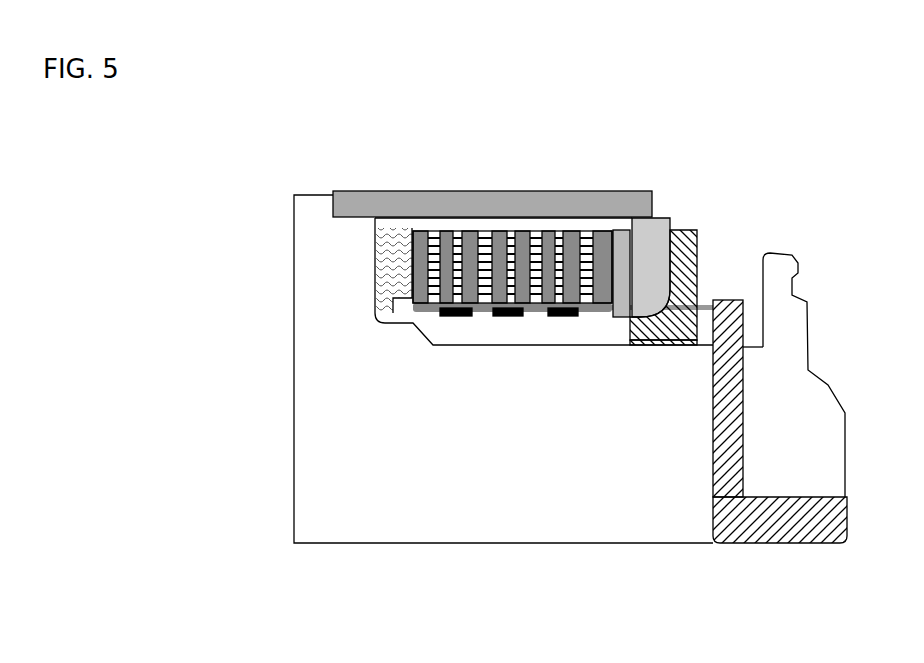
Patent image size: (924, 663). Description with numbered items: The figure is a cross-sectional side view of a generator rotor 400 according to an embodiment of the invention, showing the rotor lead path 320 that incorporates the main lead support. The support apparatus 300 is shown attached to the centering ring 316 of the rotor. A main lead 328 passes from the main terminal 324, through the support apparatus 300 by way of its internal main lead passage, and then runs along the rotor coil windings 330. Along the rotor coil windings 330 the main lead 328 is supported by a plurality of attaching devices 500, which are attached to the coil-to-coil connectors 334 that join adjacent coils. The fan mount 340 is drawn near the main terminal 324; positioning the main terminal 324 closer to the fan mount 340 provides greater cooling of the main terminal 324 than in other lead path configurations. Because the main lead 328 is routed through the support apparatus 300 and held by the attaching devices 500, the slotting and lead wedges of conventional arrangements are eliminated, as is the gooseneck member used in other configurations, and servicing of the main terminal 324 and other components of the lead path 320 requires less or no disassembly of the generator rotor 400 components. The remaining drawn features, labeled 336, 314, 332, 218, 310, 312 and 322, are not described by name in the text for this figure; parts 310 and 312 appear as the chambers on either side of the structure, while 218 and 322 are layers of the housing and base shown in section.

The generator rotor 400 is at (567, 152).
The insulating member 336 is at (418, 232).
The top plate 314 is at (437, 203).
The rotor coil windings 330 is at (495, 230).
The coil winding 332 is at (577, 250).
The centering ring 316 is at (650, 245).
The support apparatus 300 is at (698, 228).
The fan mount 340 is at (792, 255).
The main terminal 324 is at (743, 365).
The coil-to-coil connectors 334 is at (442, 313).
The main lead 328 is at (483, 313).
The attaching devices 500 is at (563, 310).
The thin layer 218 is at (665, 346).
The first chamber 310 is at (502, 469).
The second chamber 312 is at (767, 469).
The lead path 320 is at (753, 563).
The base plate 322 is at (798, 517).